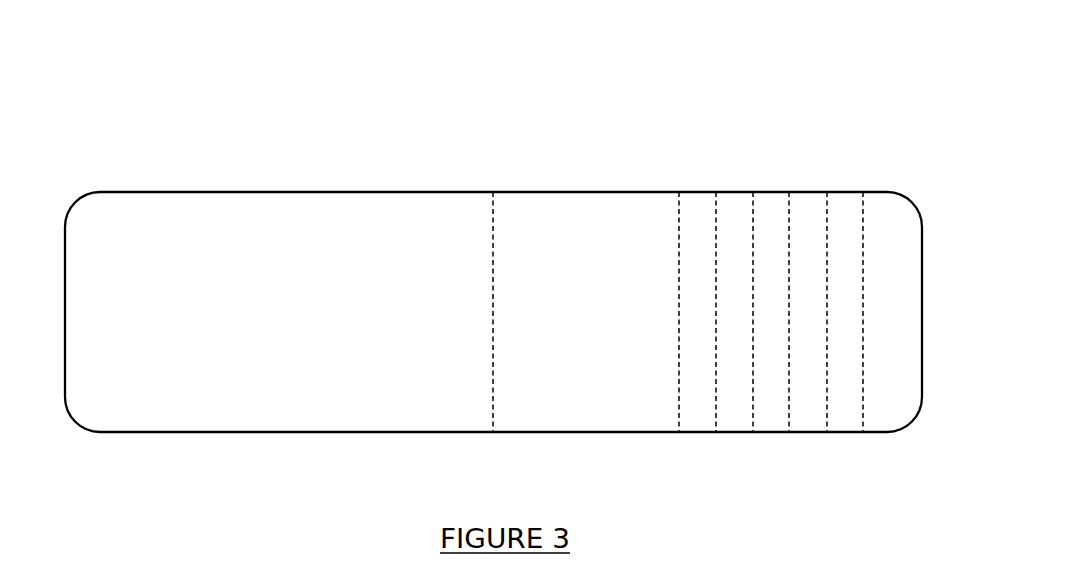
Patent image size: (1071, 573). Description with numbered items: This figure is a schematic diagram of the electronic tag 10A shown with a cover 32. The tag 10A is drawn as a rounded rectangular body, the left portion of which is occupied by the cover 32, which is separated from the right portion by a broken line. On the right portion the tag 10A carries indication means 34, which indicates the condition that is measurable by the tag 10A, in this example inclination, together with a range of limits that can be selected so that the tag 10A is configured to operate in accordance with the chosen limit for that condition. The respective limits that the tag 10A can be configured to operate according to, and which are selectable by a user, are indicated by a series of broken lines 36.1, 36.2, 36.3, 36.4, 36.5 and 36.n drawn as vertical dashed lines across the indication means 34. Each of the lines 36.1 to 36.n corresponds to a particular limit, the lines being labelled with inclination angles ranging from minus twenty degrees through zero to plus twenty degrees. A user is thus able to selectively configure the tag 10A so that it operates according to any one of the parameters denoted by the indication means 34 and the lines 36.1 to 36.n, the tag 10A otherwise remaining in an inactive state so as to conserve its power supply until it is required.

The tag 10A is at (708, 92).
The cover 32 is at (268, 326).
The indication means 34 is at (650, 270).
The broken line 36.1 is at (679, 230).
The broken line 36.2 is at (716, 393).
The broken line 36.3 is at (753, 230).
The broken line 36.4 is at (789, 393).
The broken line 36.5 is at (827, 230).
The broken line 36.n is at (863, 393).